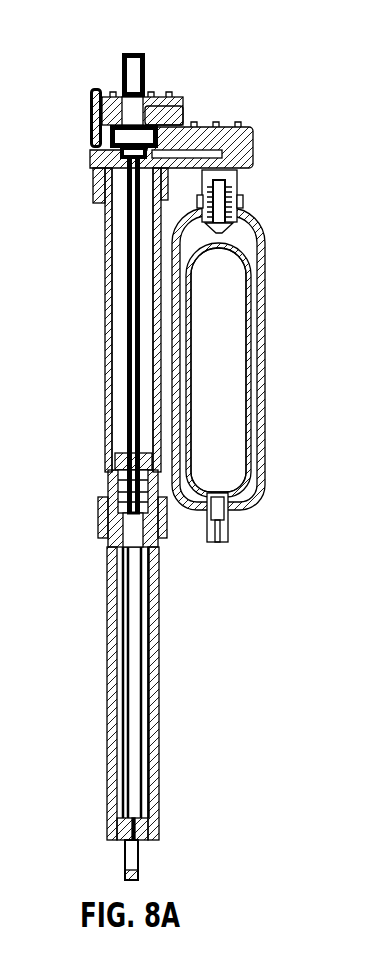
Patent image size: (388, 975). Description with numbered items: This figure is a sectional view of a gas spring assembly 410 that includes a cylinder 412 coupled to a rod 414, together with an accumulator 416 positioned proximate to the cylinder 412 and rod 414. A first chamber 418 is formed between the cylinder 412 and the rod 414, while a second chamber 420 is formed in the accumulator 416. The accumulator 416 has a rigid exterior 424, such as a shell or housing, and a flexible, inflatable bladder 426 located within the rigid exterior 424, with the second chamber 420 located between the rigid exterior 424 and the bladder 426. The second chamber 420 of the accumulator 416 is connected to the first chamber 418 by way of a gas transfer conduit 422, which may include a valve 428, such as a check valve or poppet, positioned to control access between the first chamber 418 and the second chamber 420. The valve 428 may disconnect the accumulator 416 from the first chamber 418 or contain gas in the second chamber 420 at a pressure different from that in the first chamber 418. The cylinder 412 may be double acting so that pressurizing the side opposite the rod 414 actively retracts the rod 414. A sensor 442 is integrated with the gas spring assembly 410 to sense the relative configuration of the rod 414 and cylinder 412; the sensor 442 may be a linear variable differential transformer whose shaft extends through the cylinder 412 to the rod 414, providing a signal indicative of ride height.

The gas spring assembly 410 is at (262, 82).
The cylinder 412 is at (105, 317).
The rod 414 is at (110, 665).
The accumulator 416 is at (230, 303).
The first chamber 418 is at (113, 372).
The second chamber 420 is at (265, 240).
The gas transfer conduit 422 is at (250, 147).
The rigid exterior 424 is at (265, 348).
The bladder 426 is at (237, 403).
The valve 428 is at (247, 220).
The sensor 442 is at (130, 256).